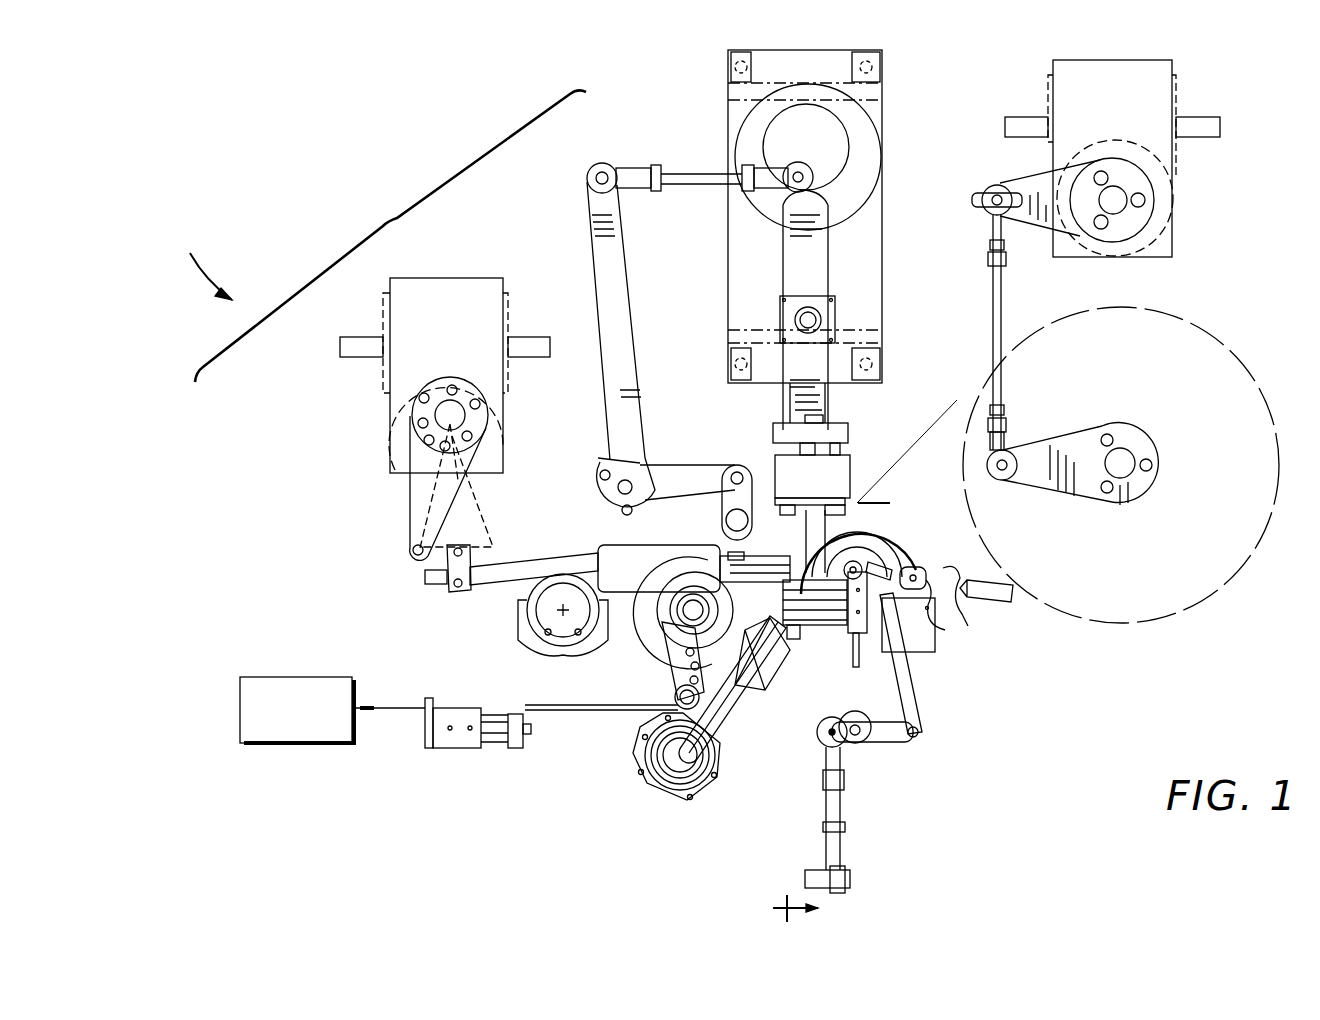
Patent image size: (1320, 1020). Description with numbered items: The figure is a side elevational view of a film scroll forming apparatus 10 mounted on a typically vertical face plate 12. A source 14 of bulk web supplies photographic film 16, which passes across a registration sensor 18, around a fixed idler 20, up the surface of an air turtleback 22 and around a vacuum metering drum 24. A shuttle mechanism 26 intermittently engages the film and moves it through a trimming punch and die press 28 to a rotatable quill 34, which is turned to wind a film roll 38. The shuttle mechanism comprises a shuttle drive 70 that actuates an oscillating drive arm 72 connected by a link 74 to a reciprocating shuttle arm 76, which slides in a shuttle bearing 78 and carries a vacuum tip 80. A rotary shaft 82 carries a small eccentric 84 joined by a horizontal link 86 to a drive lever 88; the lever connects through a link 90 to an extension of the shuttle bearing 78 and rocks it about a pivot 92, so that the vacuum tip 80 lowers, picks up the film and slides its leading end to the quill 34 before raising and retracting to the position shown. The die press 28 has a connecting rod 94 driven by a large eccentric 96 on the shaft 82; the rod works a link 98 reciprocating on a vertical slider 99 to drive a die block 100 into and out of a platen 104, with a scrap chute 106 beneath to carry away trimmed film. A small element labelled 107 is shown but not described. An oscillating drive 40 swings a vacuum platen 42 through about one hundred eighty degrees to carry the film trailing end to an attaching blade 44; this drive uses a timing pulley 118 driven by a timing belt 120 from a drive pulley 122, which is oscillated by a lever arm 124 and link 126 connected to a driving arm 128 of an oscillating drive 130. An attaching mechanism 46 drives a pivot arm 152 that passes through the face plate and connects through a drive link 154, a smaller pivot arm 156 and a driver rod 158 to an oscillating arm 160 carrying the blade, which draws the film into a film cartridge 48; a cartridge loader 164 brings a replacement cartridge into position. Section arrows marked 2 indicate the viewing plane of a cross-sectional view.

The film scroll forming apparatus 10 is at (201, 261).
The face plate 12 is at (383, 225).
The source 14 is at (282, 677).
The photographic film 16 is at (390, 708).
The registration sensor 18 is at (462, 752).
The fixed idler 20 is at (645, 706).
The air turtleback 22 is at (675, 672).
The vacuum metering drum 24 is at (676, 624).
The shuttle mechanism 26 is at (447, 591).
The trimming punch and die press 28 is at (770, 428).
The rotatable quill 34 is at (862, 562).
The film roll 38 is at (882, 574).
The oscillating drive 40 is at (1105, 255).
The vacuum platen 42 is at (918, 588).
The attaching blade 44 is at (838, 705).
The attaching mechanism 46 is at (924, 706).
The film cartridge 48 is at (950, 628).
The shuttle drive 70 is at (384, 386).
The oscillating drive arm 72 is at (409, 504).
The link 74 is at (476, 532).
The reciprocating shuttle arm 76 is at (506, 578).
The shuttle bearing 78 is at (603, 547).
The vacuum tip 80 is at (722, 565).
The rotary shaft 82 is at (873, 183).
The small eccentric 84 is at (795, 172).
The horizontal link 86 is at (681, 172).
The drive lever 88 is at (632, 312).
The link 90 is at (720, 506).
The pivot 92 is at (558, 614).
The connecting rod 94 is at (833, 283).
The large eccentric 96 is at (848, 146).
The link 98 is at (830, 399).
The vertical slider 99 is at (838, 318).
The die block 100 is at (773, 460).
The platen 104 is at (800, 706).
The scrap chute 106 is at (775, 680).
The link plate 107 is at (796, 508).
The timing pulley 118 is at (862, 556).
The timing belt 120 is at (922, 432).
The drive pulley 122 is at (976, 455).
The lever arm 124 is at (1078, 432).
The link 126 is at (992, 320).
The driving arm 128 is at (1014, 184).
The oscillating drive 130 is at (1048, 93).
The pivot arm 152 is at (808, 868).
The drive link 154 is at (846, 780).
The smaller pivot arm 156 is at (890, 744).
The driver rod 158 is at (920, 670).
The oscillating arm 160 is at (905, 642).
The cartridge loader 164 is at (1015, 605).
The section line 2- 2 is at (831, 702).